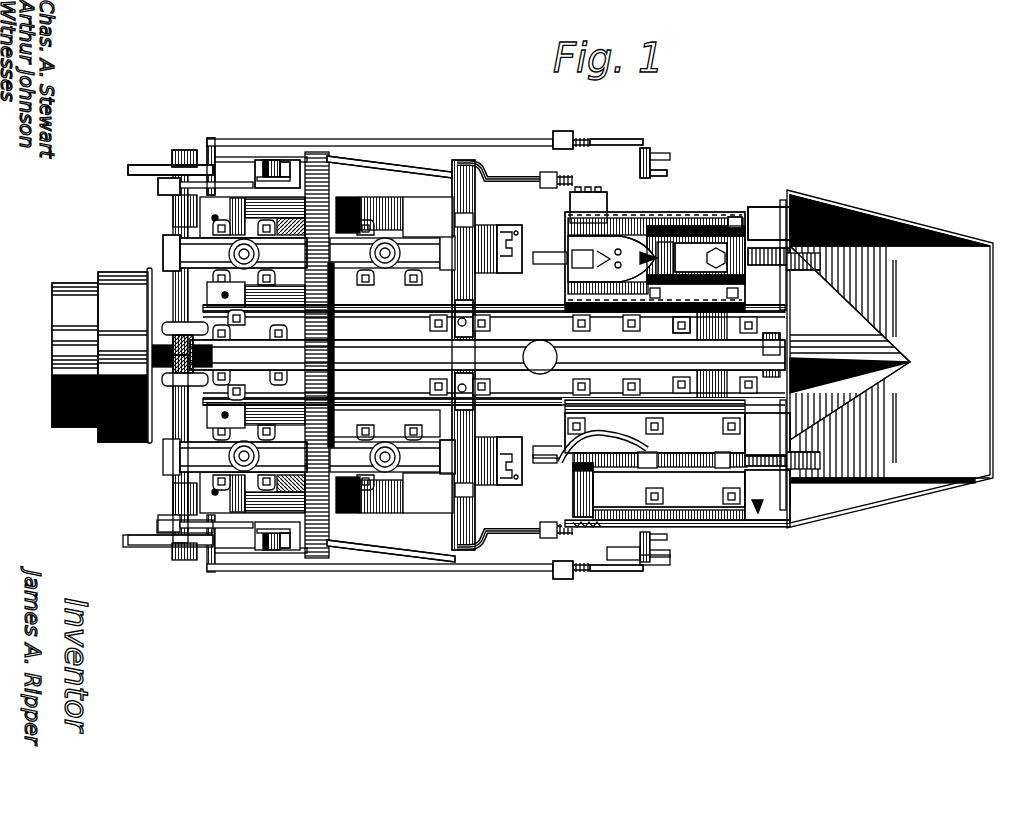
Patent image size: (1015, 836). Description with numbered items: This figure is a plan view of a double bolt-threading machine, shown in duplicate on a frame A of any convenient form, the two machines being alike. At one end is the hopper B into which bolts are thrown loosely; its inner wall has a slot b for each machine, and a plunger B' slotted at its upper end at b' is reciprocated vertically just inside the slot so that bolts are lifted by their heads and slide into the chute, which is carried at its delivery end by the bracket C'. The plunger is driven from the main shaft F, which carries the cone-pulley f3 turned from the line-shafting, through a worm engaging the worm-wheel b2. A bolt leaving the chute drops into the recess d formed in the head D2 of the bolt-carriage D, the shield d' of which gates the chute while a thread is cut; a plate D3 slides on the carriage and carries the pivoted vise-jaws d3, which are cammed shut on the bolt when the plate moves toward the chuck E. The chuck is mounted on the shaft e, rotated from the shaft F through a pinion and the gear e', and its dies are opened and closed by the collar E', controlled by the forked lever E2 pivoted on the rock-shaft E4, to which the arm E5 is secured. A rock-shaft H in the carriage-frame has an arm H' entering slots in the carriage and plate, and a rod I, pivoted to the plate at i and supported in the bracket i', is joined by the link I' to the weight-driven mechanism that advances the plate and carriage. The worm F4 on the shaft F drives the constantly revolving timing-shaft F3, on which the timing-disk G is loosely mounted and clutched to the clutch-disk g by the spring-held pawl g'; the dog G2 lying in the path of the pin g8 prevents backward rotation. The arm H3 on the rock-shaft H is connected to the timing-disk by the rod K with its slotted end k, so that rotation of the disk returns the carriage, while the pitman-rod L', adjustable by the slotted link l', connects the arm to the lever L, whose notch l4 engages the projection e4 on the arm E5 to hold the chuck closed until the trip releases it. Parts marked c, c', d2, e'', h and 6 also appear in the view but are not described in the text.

The frame A is at (722, 540).
The hopper B is at (890, 359).
The plunger B' is at (823, 361).
The slot b is at (803, 391).
The slot b' is at (850, 358).
The worm-wheel b2 is at (775, 330).
The bracket C' is at (621, 354).
The coupling shaft c is at (709, 371).
The lower housing c' is at (669, 488).
The bolt-carriage D is at (565, 242).
The head D2 is at (572, 272).
The plate D3 is at (715, 236).
The recess d is at (701, 257).
The shield d' is at (655, 433).
The spring housing d2 is at (696, 289).
The vise-jaws d3 is at (662, 240).
The chuck E is at (513, 342).
The collar E' is at (435, 490).
The forked lever E2 is at (478, 290).
The rock-shaft E4 is at (466, 160).
The arm E5 is at (388, 162).
The shaft e is at (293, 350).
The gear e' is at (385, 417).
The bearing cap e'' is at (290, 535).
The projection e4 is at (286, 162).
The shaft F is at (515, 372).
The timing-shaft F3 is at (172, 480).
The worm F4 is at (177, 335).
The cone-pulley f3 is at (100, 357).
The timing-disk G is at (160, 166).
The dog G2 is at (208, 146).
The clutch-disk g is at (146, 356).
The pawl g' is at (149, 349).
The pin g8 is at (178, 152).
The rock-shaft H is at (668, 326).
The arm H' is at (696, 194).
The arm H3 is at (622, 562).
The bolt h is at (645, 150).
The rod I is at (767, 310).
The link I' is at (776, 363).
The pivot i is at (701, 222).
The bracket i' is at (767, 379).
The rod K is at (553, 140).
The slotted end k is at (640, 150).
The lever L is at (254, 355).
The pitman-rod L' is at (476, 386).
The slotted link l' is at (608, 348).
The notch l4 is at (274, 160).
The direction arrow 6 is at (524, 454).